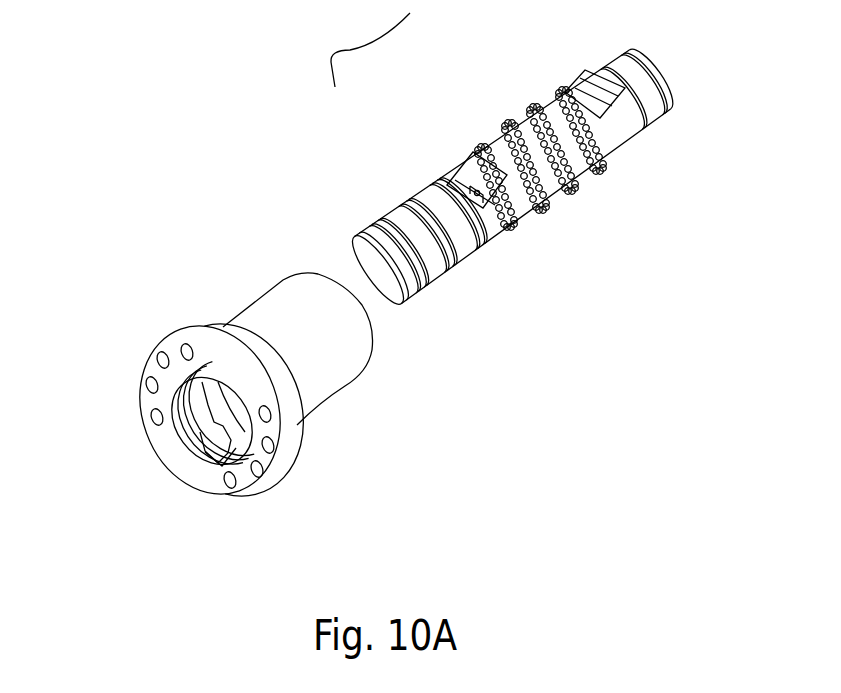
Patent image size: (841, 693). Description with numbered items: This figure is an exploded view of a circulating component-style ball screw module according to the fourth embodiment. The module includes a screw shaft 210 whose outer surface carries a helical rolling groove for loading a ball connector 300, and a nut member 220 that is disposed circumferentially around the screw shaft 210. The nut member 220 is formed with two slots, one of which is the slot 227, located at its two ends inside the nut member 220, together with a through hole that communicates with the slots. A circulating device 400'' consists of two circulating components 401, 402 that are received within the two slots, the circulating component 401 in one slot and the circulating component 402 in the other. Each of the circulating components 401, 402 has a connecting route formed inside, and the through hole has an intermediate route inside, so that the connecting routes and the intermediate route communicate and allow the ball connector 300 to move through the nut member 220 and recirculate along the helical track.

The nut member 220 is at (142, 367).
The slot 227 is at (232, 430).
The screw shaft 210 is at (447, 273).
The ball connector 300 is at (603, 172).
The circulating device 400'' is at (328, 50).
The circulating component 401 is at (475, 162).
The circulating component 402 is at (583, 93).